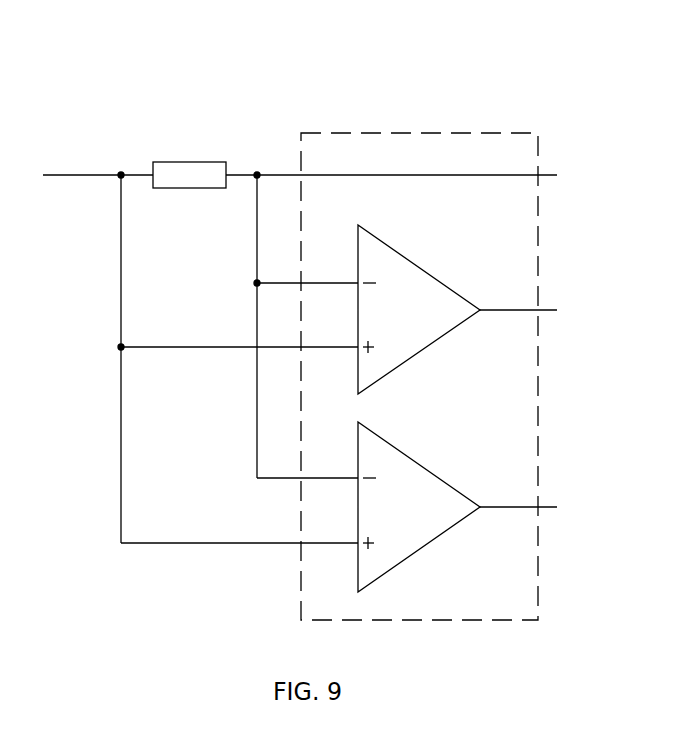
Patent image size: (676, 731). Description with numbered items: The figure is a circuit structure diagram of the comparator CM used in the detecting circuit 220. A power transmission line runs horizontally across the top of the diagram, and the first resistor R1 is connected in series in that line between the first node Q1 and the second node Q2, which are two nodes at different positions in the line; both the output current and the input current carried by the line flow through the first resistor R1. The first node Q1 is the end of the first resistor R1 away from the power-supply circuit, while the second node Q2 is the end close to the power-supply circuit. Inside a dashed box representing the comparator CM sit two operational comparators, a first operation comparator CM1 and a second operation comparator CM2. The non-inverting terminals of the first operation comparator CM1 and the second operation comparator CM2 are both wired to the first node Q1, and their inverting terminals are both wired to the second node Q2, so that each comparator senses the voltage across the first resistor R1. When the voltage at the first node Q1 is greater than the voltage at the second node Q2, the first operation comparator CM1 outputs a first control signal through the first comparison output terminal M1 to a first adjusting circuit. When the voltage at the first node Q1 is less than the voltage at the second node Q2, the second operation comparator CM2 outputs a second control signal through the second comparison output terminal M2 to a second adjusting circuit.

The detecting circuit 220 is at (307, 24).
The first node Q1 is at (117, 341).
The first resistor R1 is at (189, 163).
The second node Q2 is at (266, 308).
The comparator CM is at (420, 133).
The first operation comparator CM1 is at (299, 297).
The second operation comparator CM2 is at (300, 500).
The first comparison output terminal M1 is at (518, 297).
The second comparison output terminal M2 is at (518, 493).